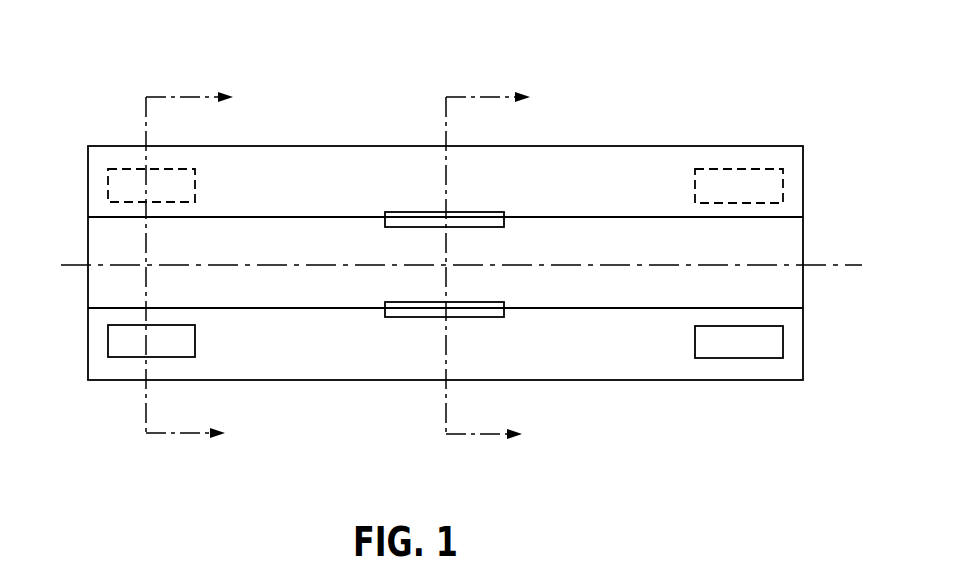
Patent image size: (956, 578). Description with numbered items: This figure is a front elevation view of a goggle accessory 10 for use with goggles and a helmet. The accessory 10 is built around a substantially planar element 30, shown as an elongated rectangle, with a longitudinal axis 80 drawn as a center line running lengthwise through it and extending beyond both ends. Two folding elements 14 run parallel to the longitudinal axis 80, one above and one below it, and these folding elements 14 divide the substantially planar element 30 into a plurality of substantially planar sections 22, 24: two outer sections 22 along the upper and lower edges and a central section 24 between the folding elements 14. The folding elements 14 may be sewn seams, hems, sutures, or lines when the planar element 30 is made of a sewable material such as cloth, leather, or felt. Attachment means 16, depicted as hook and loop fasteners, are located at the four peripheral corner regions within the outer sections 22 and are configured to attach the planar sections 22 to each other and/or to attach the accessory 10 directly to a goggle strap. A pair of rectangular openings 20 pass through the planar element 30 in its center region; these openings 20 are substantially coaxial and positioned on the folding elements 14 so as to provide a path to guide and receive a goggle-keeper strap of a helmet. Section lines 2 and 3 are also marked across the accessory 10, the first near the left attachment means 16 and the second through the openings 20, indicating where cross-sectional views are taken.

The goggle accessory 10 is at (293, 66).
The folding element 14 is at (88, 217).
The attachment means 16 is at (122, 186).
The openings 20 is at (487, 217).
The substantially planar section 22 is at (273, 193).
The substantially planar section 24 is at (258, 254).
The substantially planar element 30 is at (362, 412).
The longitudinal axis 80 is at (833, 267).
The section line 2- 2 is at (201, 262).
The section line 3- 3 is at (501, 263).